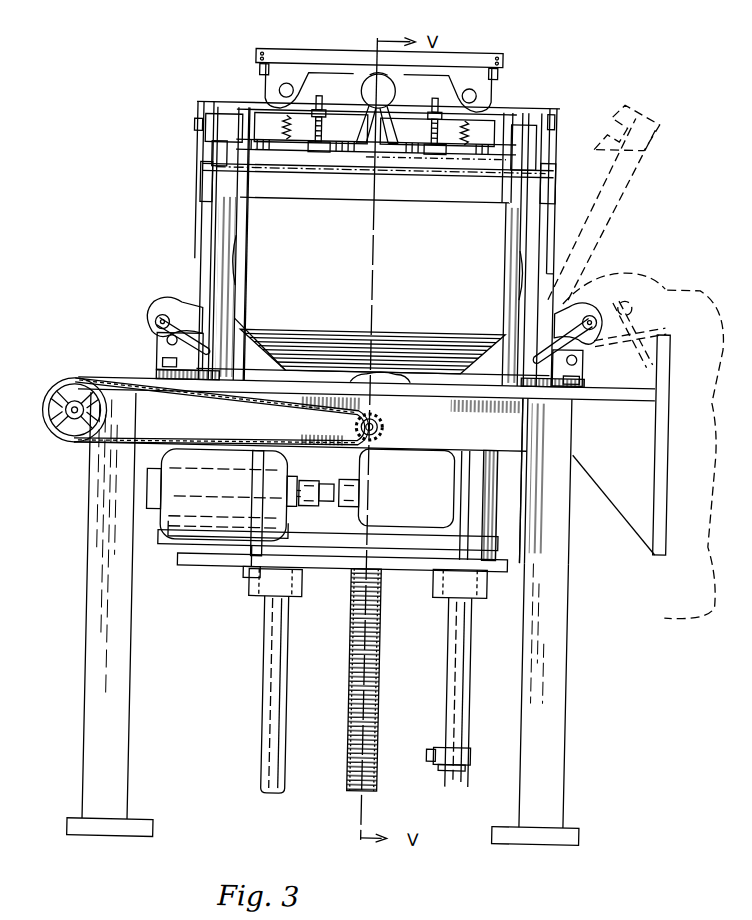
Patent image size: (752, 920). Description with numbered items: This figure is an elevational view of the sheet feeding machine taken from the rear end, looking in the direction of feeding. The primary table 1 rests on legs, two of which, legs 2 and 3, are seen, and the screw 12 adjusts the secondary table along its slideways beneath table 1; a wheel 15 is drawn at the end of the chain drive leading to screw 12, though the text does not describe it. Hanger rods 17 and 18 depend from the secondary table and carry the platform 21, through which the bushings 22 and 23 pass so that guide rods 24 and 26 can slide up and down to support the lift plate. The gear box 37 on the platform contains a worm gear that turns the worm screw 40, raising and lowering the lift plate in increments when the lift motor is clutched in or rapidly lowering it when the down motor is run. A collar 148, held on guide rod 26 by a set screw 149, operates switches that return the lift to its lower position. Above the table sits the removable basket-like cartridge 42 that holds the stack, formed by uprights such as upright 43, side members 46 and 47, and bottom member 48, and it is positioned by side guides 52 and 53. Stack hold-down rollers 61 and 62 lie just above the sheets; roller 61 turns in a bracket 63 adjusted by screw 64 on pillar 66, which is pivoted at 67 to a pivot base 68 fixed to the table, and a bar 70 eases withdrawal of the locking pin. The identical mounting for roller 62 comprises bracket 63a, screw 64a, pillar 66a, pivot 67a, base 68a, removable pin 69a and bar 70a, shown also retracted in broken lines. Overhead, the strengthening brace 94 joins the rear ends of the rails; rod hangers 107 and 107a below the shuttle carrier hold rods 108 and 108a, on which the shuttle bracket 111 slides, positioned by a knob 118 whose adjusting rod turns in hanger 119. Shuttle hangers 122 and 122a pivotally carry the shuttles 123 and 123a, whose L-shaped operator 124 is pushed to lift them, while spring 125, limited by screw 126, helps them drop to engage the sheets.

The primary table 1 is at (108, 382).
The leg 2 is at (137, 640).
The leg 3 is at (572, 577).
The screw 12 is at (389, 428).
The hand wheel pulley 15 is at (60, 442).
The hanger rod 17 is at (484, 523).
The hanger rod 18 is at (246, 575).
The platform 21 is at (343, 560).
The bushing 22 is at (297, 598).
The bushing 23 is at (437, 594).
The guide rod 24 is at (286, 682).
The guide rod 26 is at (452, 638).
The gear box 37 is at (339, 480).
The worm screw 40 is at (352, 632).
The cartridge 42 is at (240, 331).
The upright 43 is at (246, 245).
The side member 46 is at (235, 266).
The side member 47 is at (512, 275).
The bottom member 48 is at (381, 378).
The side guide 52 is at (205, 384).
The side guide 53 is at (559, 398).
The stack hold-down roller 61 is at (241, 201).
The stack hold-down roller 62 is at (488, 200).
The bracket 63 is at (208, 116).
The bracket 63a is at (533, 123).
The screw 64 is at (188, 127).
The screw 64a is at (548, 121).
The pillar 66 is at (200, 183).
The pillar 66a is at (548, 173).
The pivot 67 is at (165, 344).
The pivot 67a is at (580, 352).
The pivot base 68 is at (157, 360).
The pivot base 68a is at (586, 362).
The removable pin 69a is at (653, 322).
The bar 70 is at (172, 304).
The bar 70a is at (649, 292).
The strengthening brace 94 is at (452, 58).
The rod hanger 107 is at (298, 77).
The rod hanger 107a is at (484, 78).
The rod 108 is at (272, 90).
The rod 108a is at (469, 96).
The shuttle bracket 111 is at (424, 124).
The knob 118 is at (366, 74).
The hanger 119 is at (388, 83).
The shuttle hanger 122 is at (250, 153).
The shuttle hanger 122a is at (501, 130).
The shuttle 123 is at (308, 154).
The shuttle 123a is at (440, 162).
The L-shaped operator 124 is at (315, 141).
The spring 125 is at (279, 134).
The screw 126 is at (322, 147).
The collar 148 is at (452, 765).
The set screw 149 is at (436, 748).